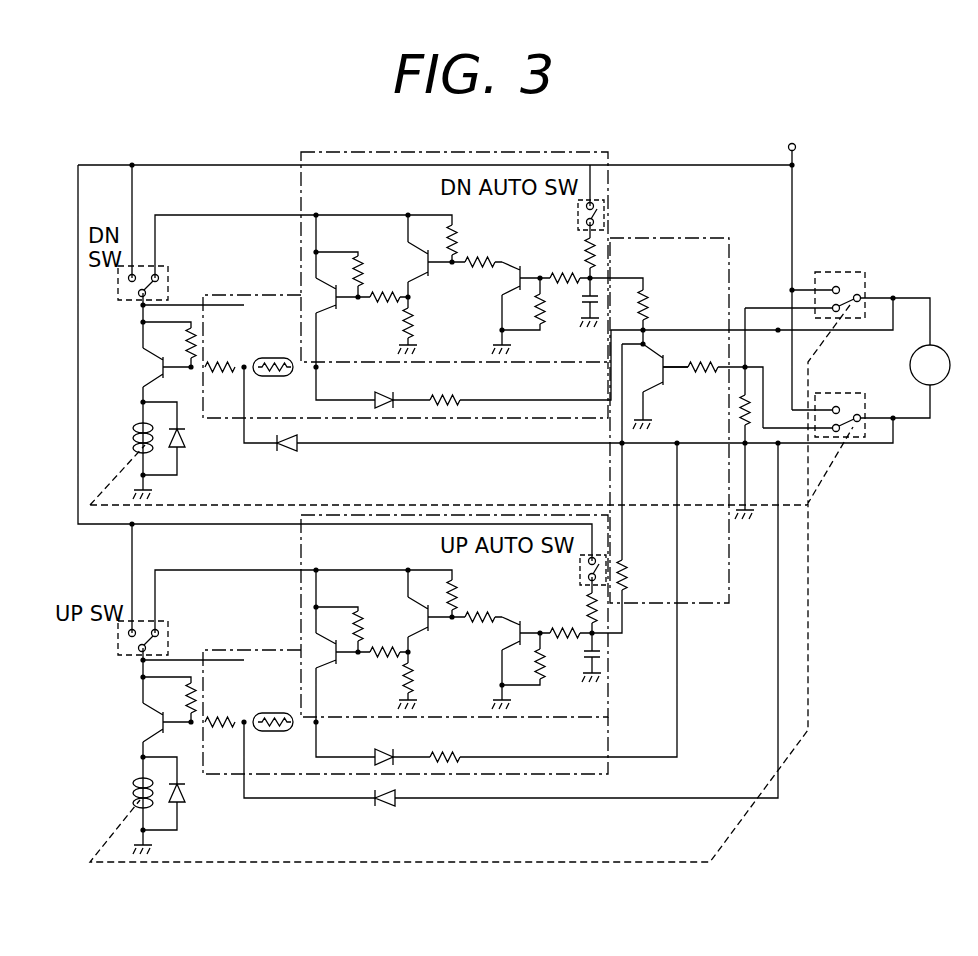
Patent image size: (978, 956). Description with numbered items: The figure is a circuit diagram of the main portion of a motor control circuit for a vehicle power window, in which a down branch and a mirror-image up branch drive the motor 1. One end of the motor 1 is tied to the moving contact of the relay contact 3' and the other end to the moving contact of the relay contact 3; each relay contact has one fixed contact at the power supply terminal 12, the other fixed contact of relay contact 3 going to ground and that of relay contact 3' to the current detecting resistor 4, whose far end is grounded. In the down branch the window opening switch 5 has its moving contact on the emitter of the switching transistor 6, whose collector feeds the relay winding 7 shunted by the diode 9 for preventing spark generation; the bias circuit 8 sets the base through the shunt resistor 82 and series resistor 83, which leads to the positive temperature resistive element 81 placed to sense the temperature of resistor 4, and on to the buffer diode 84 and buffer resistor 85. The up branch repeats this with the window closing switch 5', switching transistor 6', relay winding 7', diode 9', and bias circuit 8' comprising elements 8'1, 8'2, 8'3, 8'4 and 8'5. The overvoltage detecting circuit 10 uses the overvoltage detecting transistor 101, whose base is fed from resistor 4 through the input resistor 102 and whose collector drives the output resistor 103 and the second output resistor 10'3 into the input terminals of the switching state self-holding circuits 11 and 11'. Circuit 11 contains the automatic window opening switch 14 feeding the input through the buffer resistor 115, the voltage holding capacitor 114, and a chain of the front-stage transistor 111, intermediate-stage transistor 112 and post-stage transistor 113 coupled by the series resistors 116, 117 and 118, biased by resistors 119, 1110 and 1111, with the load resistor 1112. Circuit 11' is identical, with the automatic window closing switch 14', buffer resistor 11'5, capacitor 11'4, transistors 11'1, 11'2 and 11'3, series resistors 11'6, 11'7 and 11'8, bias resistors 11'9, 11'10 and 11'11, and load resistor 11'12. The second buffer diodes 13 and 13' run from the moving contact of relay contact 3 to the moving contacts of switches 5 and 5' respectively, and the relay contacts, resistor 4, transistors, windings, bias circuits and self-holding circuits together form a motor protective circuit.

The motor 1 is at (943, 348).
The relay contact 3 is at (845, 395).
The relay contact 3' is at (848, 275).
The current detecting resistor 4 is at (737, 421).
The window opening switch 5 is at (158, 281).
The window closing switch 5' is at (161, 636).
The switching transistor 6 is at (157, 367).
The switching transistor 6' is at (154, 722).
The relay winding 7 is at (130, 439).
The relay winding 7' is at (128, 794).
The bias circuit 8 is at (405, 338).
The bias circuit 8' is at (405, 694).
The positive temperature resistive element 81 is at (279, 384).
The shunt resistor 82 is at (199, 343).
The series resistor 83 is at (223, 376).
The buffer diode 84 is at (384, 392).
The buffer resistor 85 is at (443, 394).
The positive temperature resistive element 8'1 is at (274, 748).
The shunt resistor 8'2 is at (213, 699).
The series resistor 8'3 is at (223, 746).
The buffer diode 8'4 is at (385, 742).
The buffer resistor 8'5 is at (444, 740).
The diode for preventing spark generation 9 is at (191, 441).
The diode for preventing spark generation 9' is at (194, 796).
The overvoltage detecting circuit 10 is at (677, 401).
The overvoltage detecting transistor 101 is at (656, 390).
The input resistor 102 is at (703, 377).
The output resistor 103 is at (664, 303).
The second output resistor 10'3 is at (645, 560).
The switching state self-holding circuit 11 is at (454, 236).
The switching state self-holding circuit 11' is at (454, 593).
The front-stage transistor 111 is at (505, 285).
The intermediate-stage transistor 112 is at (418, 268).
The post-stage transistor 113 is at (327, 290).
The voltage holding capacitor 114 is at (584, 322).
The buffer resistor 115 is at (582, 262).
The series resistor 116 is at (566, 289).
The series resistor 117 is at (482, 265).
The series resistor 118 is at (382, 303).
The bias resistor 119 is at (536, 312).
The bias resistor 1110 is at (456, 246).
The bias resistor 1111 is at (364, 268).
The load resistor 1112 is at (416, 333).
The front-stage transistor 11'1 is at (498, 639).
The intermediate-stage transistor 11'2 is at (410, 621).
The post-stage transistor 11'3 is at (306, 630).
The voltage holding capacitor 11'4 is at (573, 685).
The buffer resistor 11'5 is at (568, 612).
The series resistor 11'6 is at (569, 657).
The series resistor 11'7 is at (502, 605).
The series resistor 11'8 is at (378, 674).
The bias resistor 11'9 is at (521, 670).
The bias resistor 11'10 is at (484, 588).
The bias resistor 11'11 is at (381, 611).
The load resistor 11'12 is at (443, 689).
The power supply terminal 12 is at (788, 146).
The second buffer diode 13 is at (289, 462).
The second buffer diode 13' is at (394, 818).
The automatic window opening switch 14 is at (618, 216).
The automatic window closing switch 14' is at (571, 574).